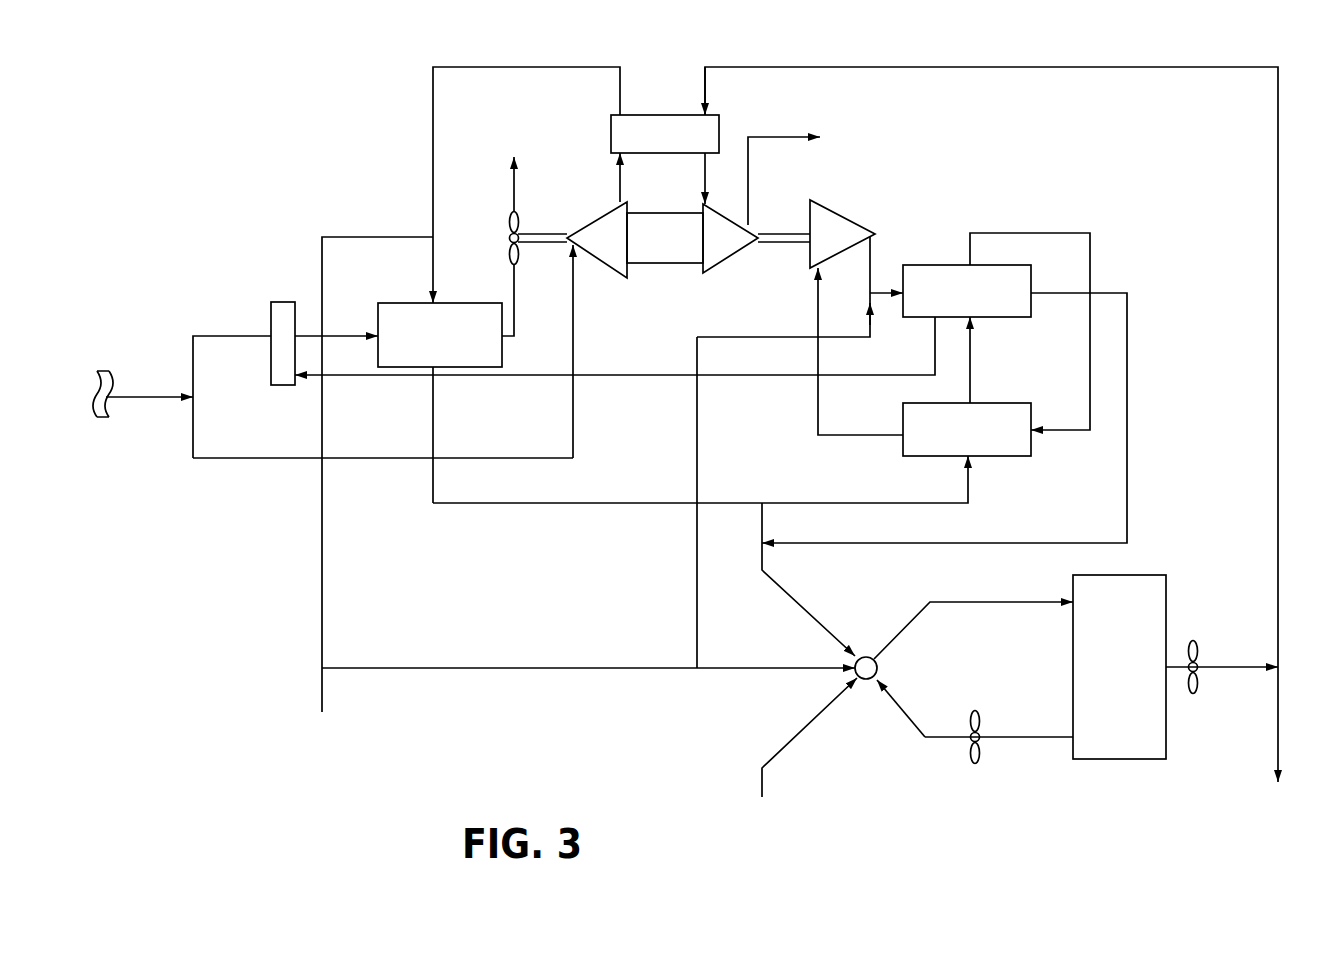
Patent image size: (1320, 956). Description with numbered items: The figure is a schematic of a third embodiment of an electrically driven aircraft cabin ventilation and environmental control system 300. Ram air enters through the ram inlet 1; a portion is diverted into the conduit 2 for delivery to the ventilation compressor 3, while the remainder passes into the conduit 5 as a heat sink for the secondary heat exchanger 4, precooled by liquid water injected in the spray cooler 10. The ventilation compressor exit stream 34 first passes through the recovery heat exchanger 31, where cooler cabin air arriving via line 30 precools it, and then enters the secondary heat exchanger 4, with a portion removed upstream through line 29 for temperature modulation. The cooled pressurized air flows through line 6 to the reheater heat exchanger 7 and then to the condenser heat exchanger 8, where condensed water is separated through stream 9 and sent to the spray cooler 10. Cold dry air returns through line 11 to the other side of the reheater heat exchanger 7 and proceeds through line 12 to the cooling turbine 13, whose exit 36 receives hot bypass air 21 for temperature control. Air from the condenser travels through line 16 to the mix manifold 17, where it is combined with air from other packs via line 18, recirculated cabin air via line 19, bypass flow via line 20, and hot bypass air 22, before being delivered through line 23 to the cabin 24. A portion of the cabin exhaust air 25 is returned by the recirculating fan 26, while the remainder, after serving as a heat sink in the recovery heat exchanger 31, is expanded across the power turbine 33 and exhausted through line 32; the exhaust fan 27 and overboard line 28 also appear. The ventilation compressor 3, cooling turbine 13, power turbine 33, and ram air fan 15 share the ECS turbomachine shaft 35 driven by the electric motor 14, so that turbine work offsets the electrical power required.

The ram inlet 1 is at (143, 395).
The conduit 2 is at (236, 458).
The ventilation compressor 3 is at (598, 222).
The secondary heat exchanger 4 is at (468, 367).
The conduit 5 is at (217, 336).
The line 6 is at (607, 503).
The reheater heat exchanger 7 is at (1002, 456).
The condenser heat exchanger 8 is at (1020, 317).
The stream 9 is at (752, 375).
The spray cooler 10 is at (286, 303).
The line 11 is at (1005, 233).
The line 12 is at (870, 435).
The cooling turbine 13 is at (824, 214).
The electric motor 14 is at (680, 263).
The ram air fan 15 is at (510, 218).
The line 16 is at (1082, 543).
The mix manifold 17 is at (878, 668).
The line 18 is at (800, 730).
The line 19 is at (905, 717).
The line 20 is at (762, 523).
The hot bypass air 21 is at (697, 424).
The hot bypass air 22 is at (750, 668).
The line 23 is at (910, 622).
The cabin 24 is at (1150, 575).
The cabin exhaust air 25 is at (1030, 737).
The recirculating fan 26 is at (972, 765).
The exhaust fan 27 is at (1193, 693).
The overboard line 28 is at (1243, 667).
The line 29 is at (362, 237).
The line 30 is at (1276, 272).
The recovery heat exchanger 31 is at (721, 117).
The line 32 is at (785, 137).
The power turbine 33 is at (738, 252).
The ventilation compressor exit stream 34 is at (492, 67).
The ECS turbomachine shaft 35 is at (789, 234).
The exit 36 is at (878, 242).
The electrically driven aircraft cabin ventilation and environmental control system 300 is at (782, 55).